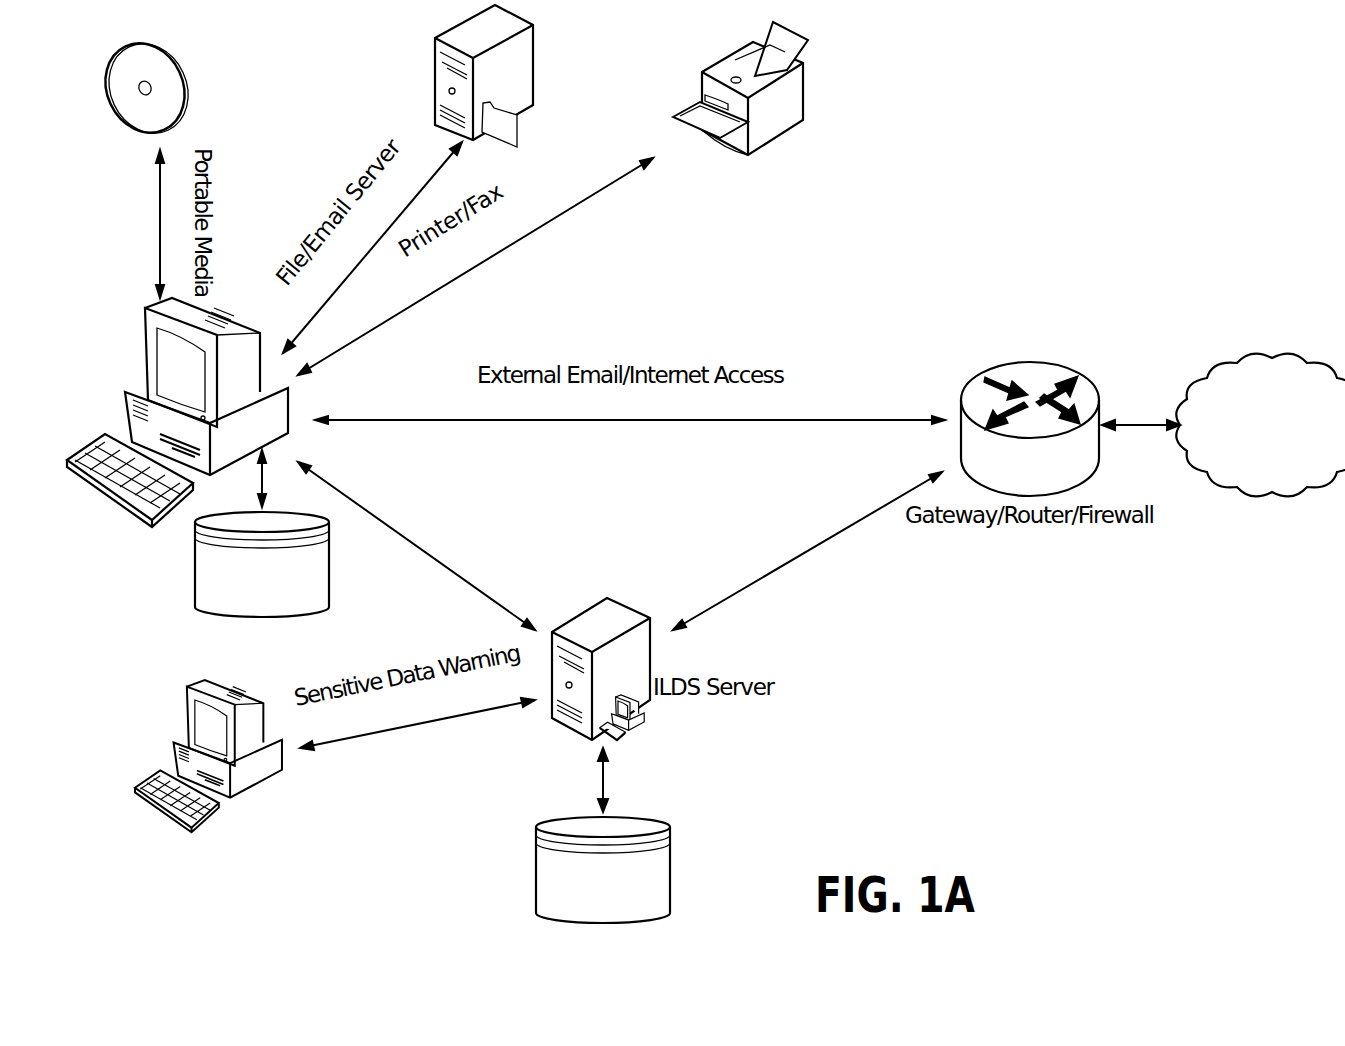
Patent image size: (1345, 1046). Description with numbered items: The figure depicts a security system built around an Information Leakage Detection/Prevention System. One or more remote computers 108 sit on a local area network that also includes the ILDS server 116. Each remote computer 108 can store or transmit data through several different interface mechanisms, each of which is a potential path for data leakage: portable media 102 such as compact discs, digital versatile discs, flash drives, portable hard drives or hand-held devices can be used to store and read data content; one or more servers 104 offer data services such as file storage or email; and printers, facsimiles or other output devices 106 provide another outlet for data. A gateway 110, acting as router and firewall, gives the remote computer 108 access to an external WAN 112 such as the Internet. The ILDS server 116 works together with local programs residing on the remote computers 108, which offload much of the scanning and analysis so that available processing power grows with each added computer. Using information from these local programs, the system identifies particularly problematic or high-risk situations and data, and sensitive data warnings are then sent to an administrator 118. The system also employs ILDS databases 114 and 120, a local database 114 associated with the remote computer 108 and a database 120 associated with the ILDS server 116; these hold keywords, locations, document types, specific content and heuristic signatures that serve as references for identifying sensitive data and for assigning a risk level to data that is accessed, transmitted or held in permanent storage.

The portable media 102 is at (163, 56).
The server 104 is at (538, 42).
The printer/facsimile 106 is at (807, 110).
The remote computer 108 is at (230, 324).
The gateway 110 is at (1047, 360).
The WAN 112 is at (1285, 362).
The ILDS database 114 is at (281, 512).
The ILDS server 116 is at (610, 614).
The administrator 118 is at (247, 686).
The ILDS database 120 is at (657, 818).